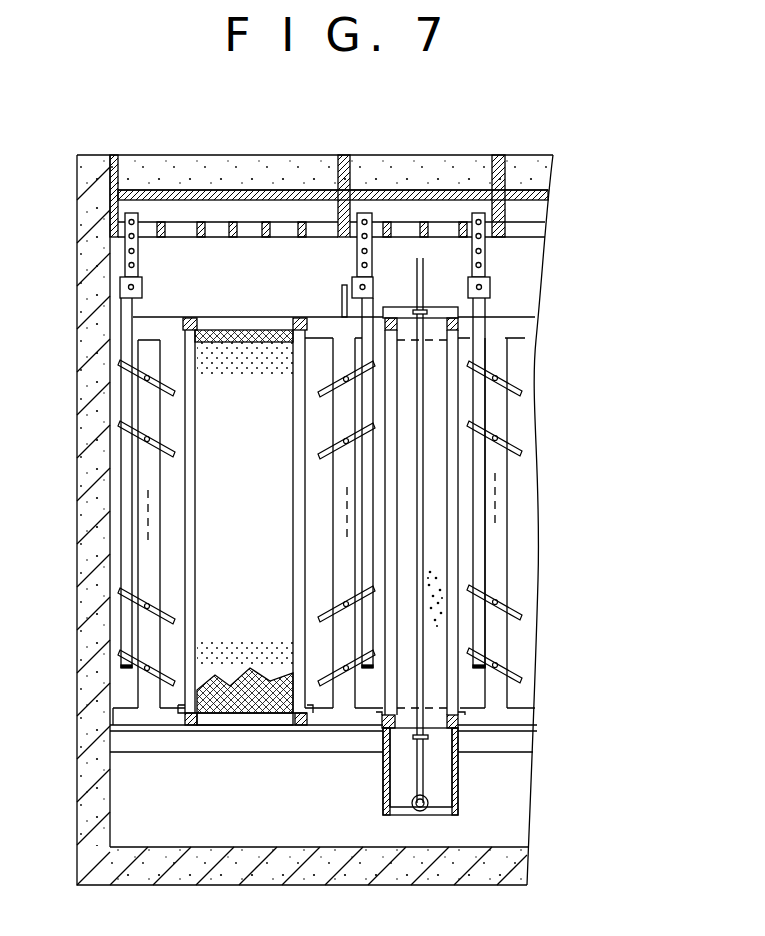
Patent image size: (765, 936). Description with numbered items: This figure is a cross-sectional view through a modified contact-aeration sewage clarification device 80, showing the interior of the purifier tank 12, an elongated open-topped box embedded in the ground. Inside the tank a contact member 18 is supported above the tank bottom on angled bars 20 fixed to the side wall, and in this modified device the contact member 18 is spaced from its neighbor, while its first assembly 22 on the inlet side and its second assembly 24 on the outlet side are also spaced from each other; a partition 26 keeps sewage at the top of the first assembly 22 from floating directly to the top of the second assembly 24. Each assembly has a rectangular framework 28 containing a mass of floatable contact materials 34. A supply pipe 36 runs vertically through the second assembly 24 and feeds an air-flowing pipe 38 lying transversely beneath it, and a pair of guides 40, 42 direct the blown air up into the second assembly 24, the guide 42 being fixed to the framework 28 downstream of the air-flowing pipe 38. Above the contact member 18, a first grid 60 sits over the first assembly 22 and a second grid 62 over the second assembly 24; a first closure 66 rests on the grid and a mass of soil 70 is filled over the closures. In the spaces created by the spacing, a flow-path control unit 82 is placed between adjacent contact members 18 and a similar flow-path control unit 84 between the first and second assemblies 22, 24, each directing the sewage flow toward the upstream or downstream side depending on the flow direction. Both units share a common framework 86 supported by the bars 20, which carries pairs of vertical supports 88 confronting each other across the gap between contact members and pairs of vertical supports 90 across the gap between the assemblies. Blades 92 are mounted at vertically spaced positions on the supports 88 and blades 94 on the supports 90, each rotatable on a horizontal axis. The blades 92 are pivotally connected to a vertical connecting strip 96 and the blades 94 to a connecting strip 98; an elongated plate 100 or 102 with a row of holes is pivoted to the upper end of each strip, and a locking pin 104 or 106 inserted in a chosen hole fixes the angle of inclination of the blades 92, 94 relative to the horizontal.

The purifier tank 12 is at (76, 457).
The contact member 18 is at (230, 734).
The angled bar 20 is at (143, 740).
The first assembly 22 is at (203, 728).
The second assembly 24 is at (380, 705).
The partition 26 is at (340, 310).
The framework 28 is at (297, 728).
The contact material 34 is at (438, 572).
The supply pipe 36 is at (420, 517).
The air-flowing pipe 38 is at (417, 810).
The guide 40 is at (383, 798).
The guide 42 is at (460, 798).
The first grid 60 is at (250, 223).
The second grid 62 is at (406, 226).
The first closure 66 is at (113, 153).
The soil 70 is at (195, 168).
The clarification device 80 is at (527, 150).
The flow-path control unit 82 is at (122, 671).
The flow-path control unit 84 is at (327, 692).
The common framework 86 is at (113, 737).
The support 88 is at (139, 534).
The support 90 is at (343, 548).
The blade 92 is at (170, 610).
The blade 94 is at (333, 440).
The connecting strip 96 is at (121, 291).
The connecting strip 98 is at (344, 292).
The elongated plate 100 is at (124, 256).
The elongated plate 102 is at (357, 261).
The locking pin 104 is at (131, 212).
The locking pin 106 is at (366, 214).